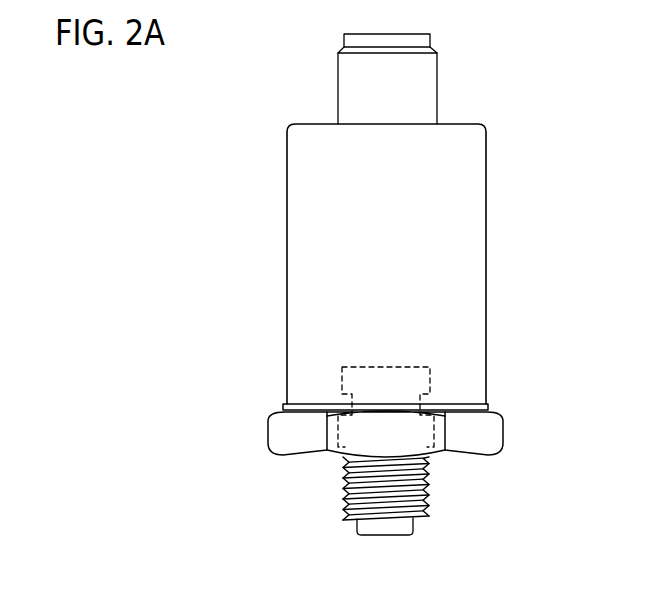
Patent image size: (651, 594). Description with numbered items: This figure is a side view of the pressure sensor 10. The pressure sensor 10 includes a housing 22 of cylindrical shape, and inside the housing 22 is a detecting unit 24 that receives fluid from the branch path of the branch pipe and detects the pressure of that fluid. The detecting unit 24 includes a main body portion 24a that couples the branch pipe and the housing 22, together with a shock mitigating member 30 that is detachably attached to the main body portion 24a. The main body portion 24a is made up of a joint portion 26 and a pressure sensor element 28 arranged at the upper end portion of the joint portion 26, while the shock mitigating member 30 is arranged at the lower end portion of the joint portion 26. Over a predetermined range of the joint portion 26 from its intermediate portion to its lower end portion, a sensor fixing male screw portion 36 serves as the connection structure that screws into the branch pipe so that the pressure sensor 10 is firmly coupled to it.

The pressure sensor 10 is at (160, 128).
The housing 22 is at (486, 228).
The detecting unit 24 is at (372, 358).
The main body portion 24a is at (367, 403).
The joint portion 26 is at (342, 485).
The pressure sensor element 28 is at (405, 367).
The shock mitigating member 30 is at (370, 537).
The sensor fixing male screw portion 36 is at (428, 480).